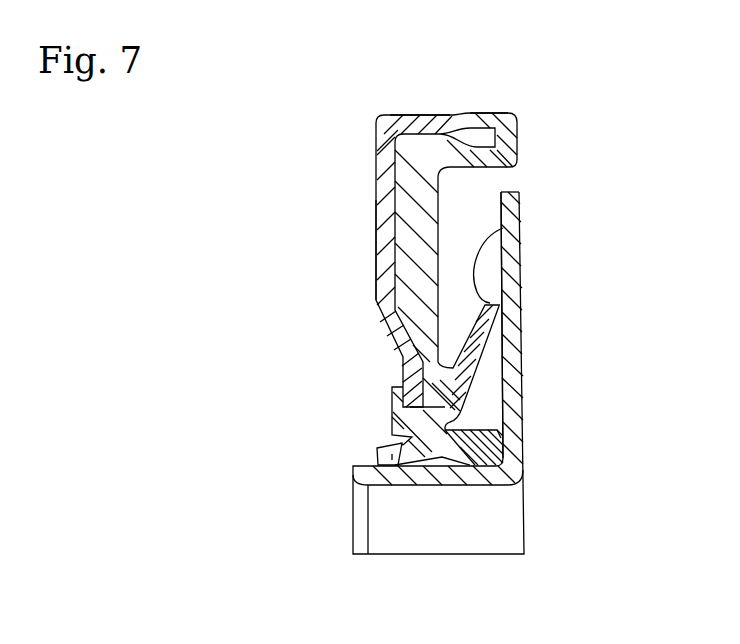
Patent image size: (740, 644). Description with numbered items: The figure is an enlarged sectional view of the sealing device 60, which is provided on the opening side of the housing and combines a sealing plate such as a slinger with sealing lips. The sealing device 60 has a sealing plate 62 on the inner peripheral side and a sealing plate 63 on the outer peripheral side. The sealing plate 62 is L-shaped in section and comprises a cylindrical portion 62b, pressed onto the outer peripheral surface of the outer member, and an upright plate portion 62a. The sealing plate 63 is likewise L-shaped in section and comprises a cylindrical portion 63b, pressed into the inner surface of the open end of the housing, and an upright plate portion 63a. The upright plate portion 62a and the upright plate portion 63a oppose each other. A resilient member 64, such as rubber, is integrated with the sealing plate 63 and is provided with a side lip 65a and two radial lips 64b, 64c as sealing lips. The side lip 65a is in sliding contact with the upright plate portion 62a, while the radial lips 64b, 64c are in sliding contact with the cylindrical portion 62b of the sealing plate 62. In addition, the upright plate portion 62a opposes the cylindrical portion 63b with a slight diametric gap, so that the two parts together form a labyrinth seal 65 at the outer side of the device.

The sealing device 60 is at (508, 113).
The sealing plate 62 is at (527, 320).
The upright plate portion 62a is at (513, 286).
The cylindrical portion 62b is at (492, 487).
The sealing plate 63 is at (390, 115).
The upright plate portion 63a is at (387, 223).
The cylindrical portion 63b is at (418, 114).
The resilient member 64 is at (447, 153).
The radial lip 64b is at (397, 463).
The radial lip 64c is at (472, 442).
The labyrinth seal 65 is at (503, 178).
The side lip 65a is at (488, 252).